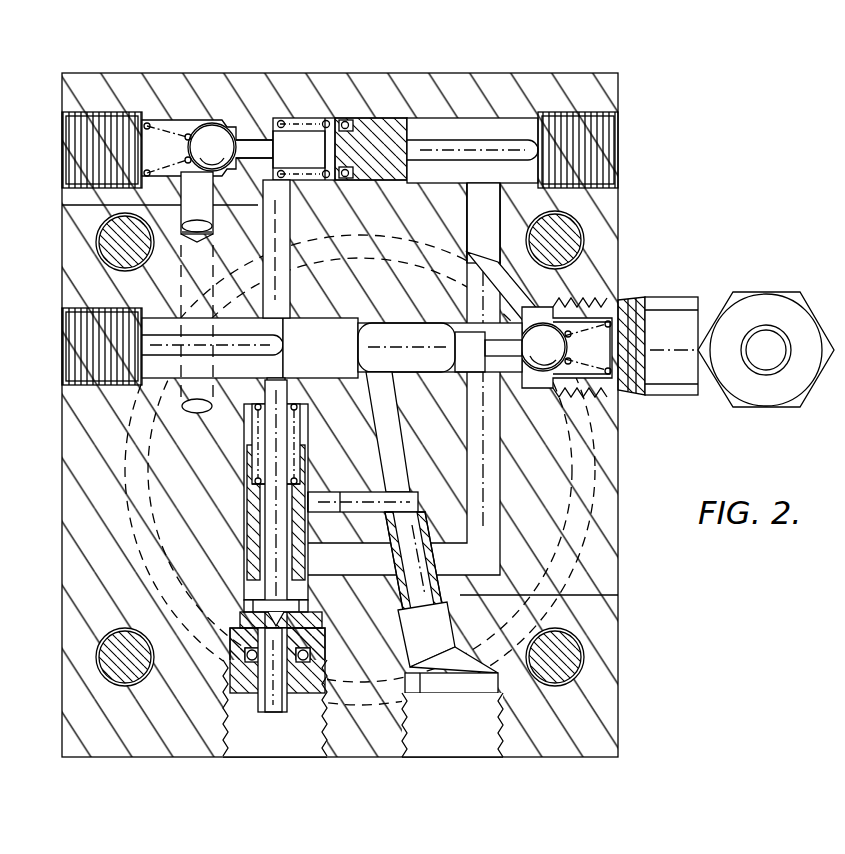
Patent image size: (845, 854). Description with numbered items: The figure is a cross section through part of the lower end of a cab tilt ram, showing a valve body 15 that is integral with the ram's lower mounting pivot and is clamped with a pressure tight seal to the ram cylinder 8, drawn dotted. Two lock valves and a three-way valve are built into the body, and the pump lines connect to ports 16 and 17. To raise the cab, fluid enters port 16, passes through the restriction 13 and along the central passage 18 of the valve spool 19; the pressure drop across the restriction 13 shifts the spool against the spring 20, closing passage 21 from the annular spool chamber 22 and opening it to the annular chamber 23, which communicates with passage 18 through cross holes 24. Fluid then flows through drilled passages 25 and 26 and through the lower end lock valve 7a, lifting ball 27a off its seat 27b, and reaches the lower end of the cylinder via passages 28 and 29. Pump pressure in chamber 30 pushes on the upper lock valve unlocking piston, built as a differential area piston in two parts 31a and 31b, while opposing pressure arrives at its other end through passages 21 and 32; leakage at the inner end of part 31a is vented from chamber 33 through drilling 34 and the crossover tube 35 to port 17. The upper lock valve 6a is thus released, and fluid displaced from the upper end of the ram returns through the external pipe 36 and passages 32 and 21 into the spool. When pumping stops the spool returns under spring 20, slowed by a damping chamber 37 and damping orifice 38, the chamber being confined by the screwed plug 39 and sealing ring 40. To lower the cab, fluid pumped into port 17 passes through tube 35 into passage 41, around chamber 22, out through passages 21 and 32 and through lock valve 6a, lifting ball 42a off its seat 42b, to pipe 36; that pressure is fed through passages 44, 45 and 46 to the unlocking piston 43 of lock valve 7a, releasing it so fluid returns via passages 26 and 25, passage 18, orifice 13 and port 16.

The upper lock valve 6a is at (605, 398).
The lower end lock valve 7a is at (188, 122).
The ram cylinder 8 is at (95, 433).
The restriction 13 is at (310, 624).
The valve body 15 is at (75, 483).
The port 16 is at (288, 751).
The port 17 is at (460, 740).
The passage 18 is at (275, 556).
The valve spool 19 is at (246, 508).
The spring 20 is at (258, 418).
The passage 21 is at (372, 578).
The annular spool chamber 22 is at (318, 532).
The annular chamber 23 is at (262, 592).
The cross holes 24 is at (253, 605).
The drilled passage 25 is at (270, 395).
The drilled passage 26 is at (70, 205).
The ball 27a is at (212, 145).
The seat 27b is at (232, 130).
The passage 28 is at (140, 152).
The passage 29 is at (190, 406).
The chamber 30 is at (262, 325).
The unlocking piston part 31a is at (310, 300).
The unlocking piston part 31b is at (434, 334).
The passage 32 is at (488, 492).
The chamber 33 is at (372, 318).
The drilling 34 is at (398, 458).
The crossover tube 35 is at (640, 598).
The external pipe 36 is at (765, 360).
The damping chamber 37 is at (338, 330).
The damping orifice 38 is at (245, 633).
The screwed plug 39 is at (250, 688).
The sealing ring 40 is at (395, 660).
The passage 41 is at (338, 502).
The ball 42a is at (640, 335).
The seat 42b is at (558, 300).
The unlocking piston 43 is at (333, 128).
The passage 44 is at (508, 275).
The passage 45 is at (470, 232).
The passage 46 is at (505, 122).